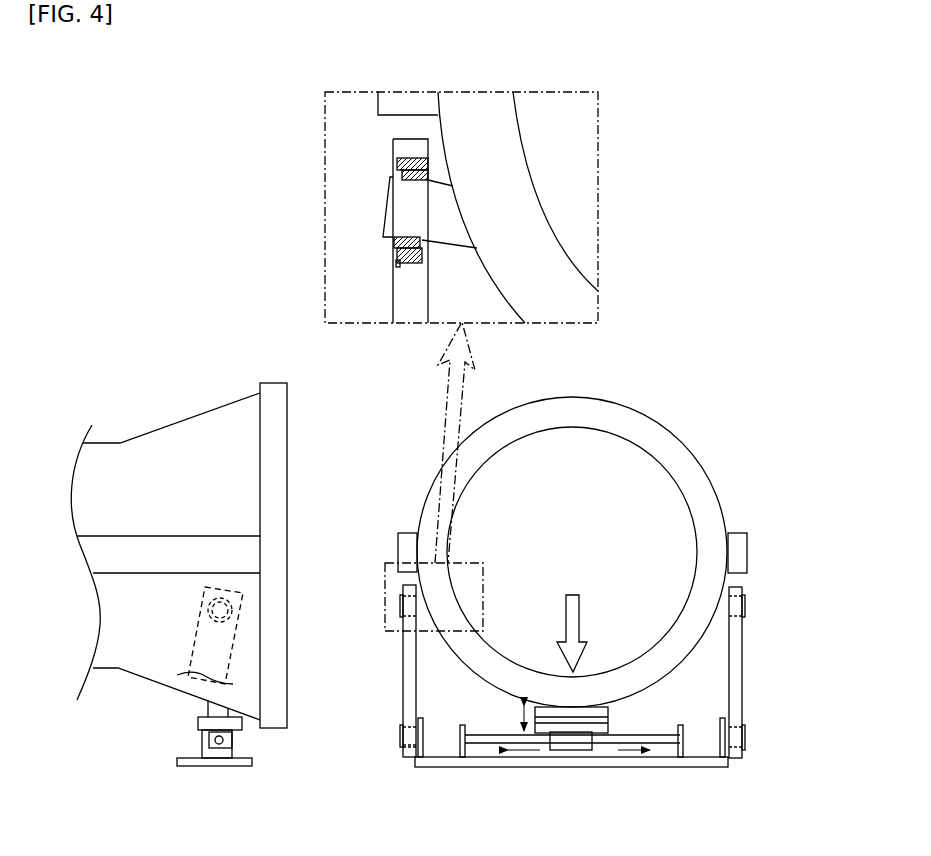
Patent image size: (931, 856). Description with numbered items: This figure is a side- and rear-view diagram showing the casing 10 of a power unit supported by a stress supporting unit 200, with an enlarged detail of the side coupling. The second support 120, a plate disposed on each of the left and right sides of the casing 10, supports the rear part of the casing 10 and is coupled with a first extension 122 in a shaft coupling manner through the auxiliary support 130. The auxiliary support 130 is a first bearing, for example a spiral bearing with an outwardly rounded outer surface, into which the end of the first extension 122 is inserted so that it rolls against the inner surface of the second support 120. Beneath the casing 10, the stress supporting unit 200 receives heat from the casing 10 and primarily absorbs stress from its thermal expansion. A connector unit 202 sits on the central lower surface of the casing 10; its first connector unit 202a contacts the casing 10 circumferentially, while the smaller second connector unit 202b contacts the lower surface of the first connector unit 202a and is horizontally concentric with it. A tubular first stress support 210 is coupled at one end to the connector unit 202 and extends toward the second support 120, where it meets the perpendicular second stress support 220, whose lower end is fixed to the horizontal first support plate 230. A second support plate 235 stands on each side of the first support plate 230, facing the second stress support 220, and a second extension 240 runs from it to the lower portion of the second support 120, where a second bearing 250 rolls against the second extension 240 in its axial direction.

The casing 10 is at (183, 407).
The second support 120 is at (393, 279).
The first extension 122 is at (388, 218).
The auxiliary support 130 is at (395, 175).
The stress supporting unit 200 is at (806, 164).
The connector unit 202 is at (695, 716).
The first connector unit 202a is at (608, 712).
The second connector unit 202b is at (570, 737).
The first stress support 210 is at (477, 737).
The second stress support 220 is at (460, 737).
The first support plate 230 is at (528, 768).
The second support plate 235 is at (416, 723).
The second extension 240 is at (400, 737).
The second bearing 250 is at (410, 745).